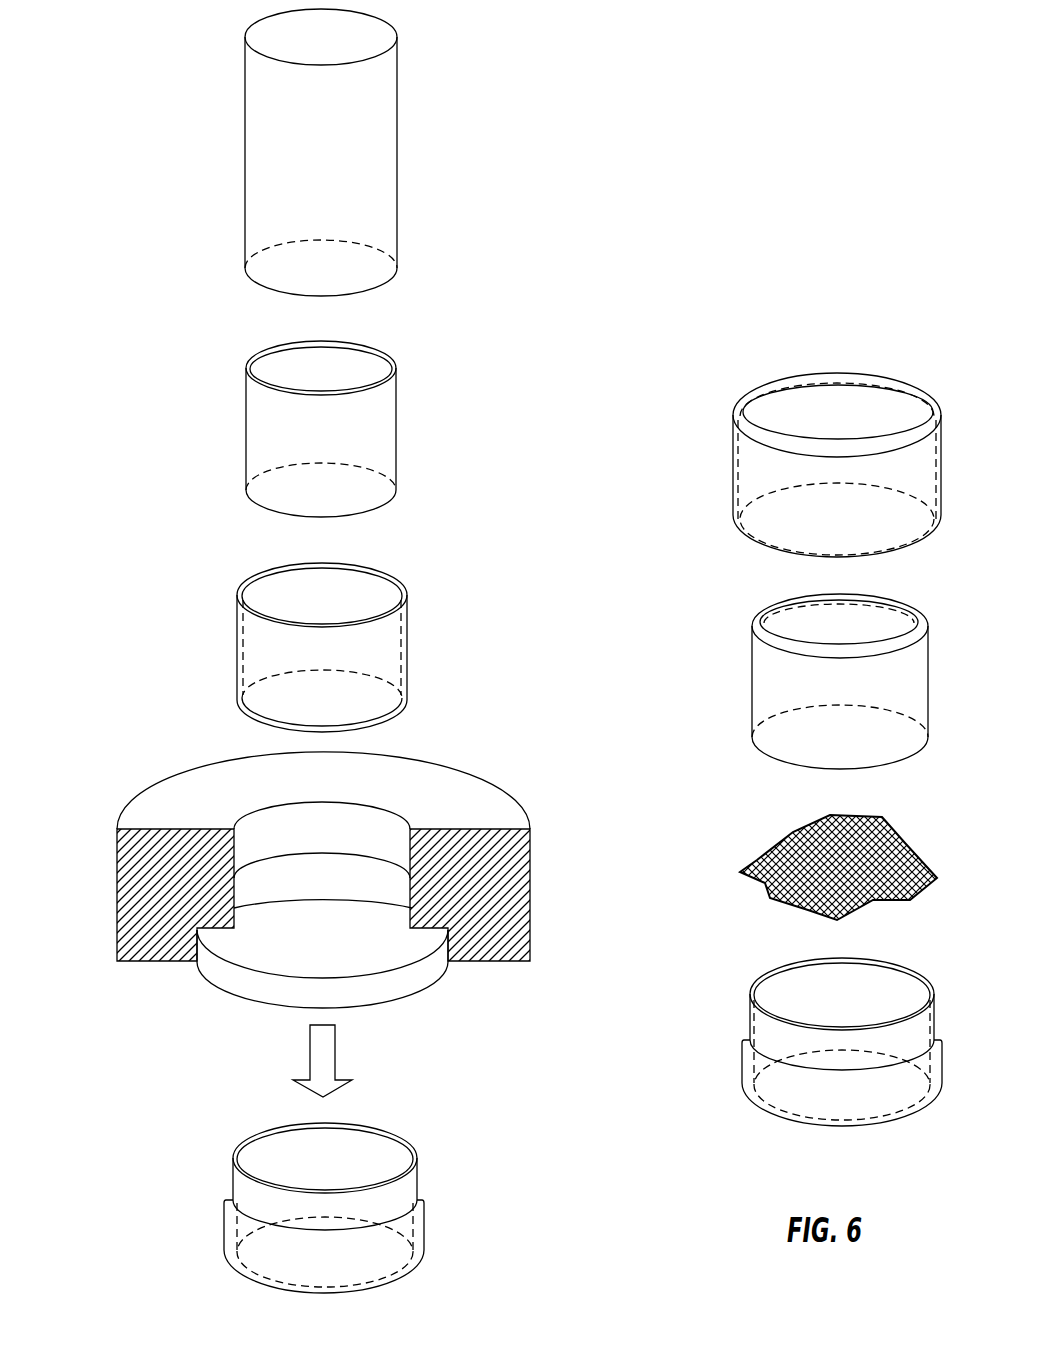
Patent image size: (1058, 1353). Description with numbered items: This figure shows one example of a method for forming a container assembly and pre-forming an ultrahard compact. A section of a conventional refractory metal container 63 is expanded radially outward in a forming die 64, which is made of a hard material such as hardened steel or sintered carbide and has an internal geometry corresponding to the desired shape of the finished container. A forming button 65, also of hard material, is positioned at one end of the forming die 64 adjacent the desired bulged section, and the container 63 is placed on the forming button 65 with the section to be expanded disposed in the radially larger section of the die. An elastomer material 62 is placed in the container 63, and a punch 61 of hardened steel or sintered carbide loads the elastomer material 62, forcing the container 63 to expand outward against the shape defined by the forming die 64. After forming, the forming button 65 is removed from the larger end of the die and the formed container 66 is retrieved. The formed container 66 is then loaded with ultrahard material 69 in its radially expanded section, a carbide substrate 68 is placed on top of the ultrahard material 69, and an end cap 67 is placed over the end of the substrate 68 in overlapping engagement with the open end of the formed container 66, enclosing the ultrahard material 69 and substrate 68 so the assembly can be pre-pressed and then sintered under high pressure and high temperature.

The punch 61 is at (251, 165).
The elastomer material 62 is at (253, 438).
The refractory metal container 63 is at (254, 662).
The forming die 64 is at (122, 897).
The forming button 65 is at (228, 983).
The formed container 66 is at (245, 1193).
The end cap 67 is at (750, 473).
The carbide substrate 68 is at (770, 693).
The ultrahard material 69 is at (757, 867).